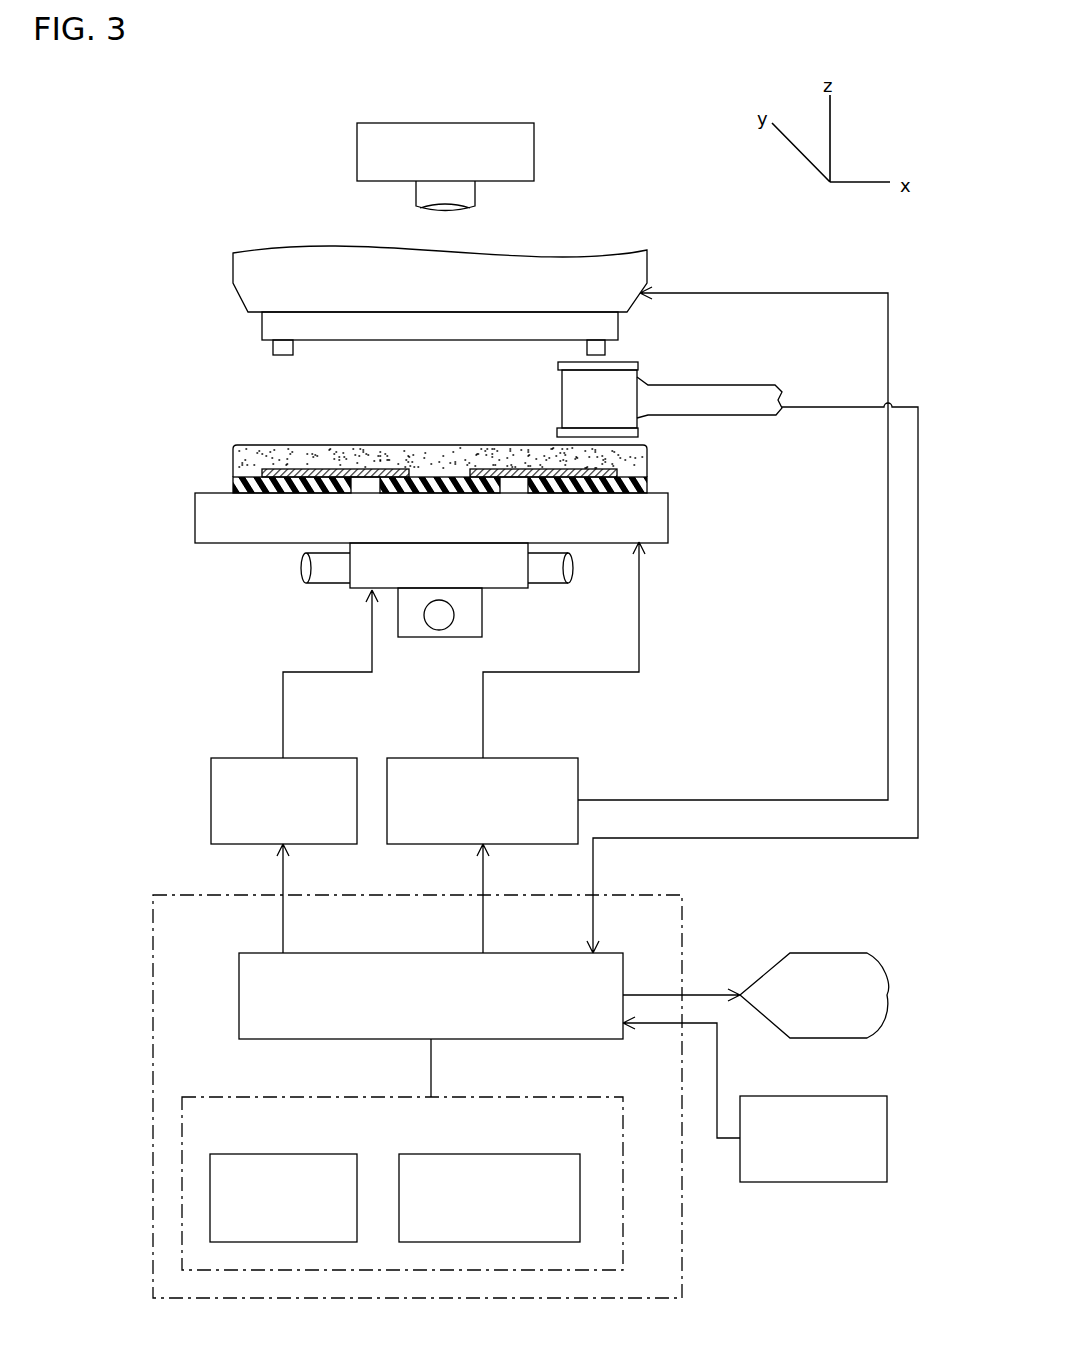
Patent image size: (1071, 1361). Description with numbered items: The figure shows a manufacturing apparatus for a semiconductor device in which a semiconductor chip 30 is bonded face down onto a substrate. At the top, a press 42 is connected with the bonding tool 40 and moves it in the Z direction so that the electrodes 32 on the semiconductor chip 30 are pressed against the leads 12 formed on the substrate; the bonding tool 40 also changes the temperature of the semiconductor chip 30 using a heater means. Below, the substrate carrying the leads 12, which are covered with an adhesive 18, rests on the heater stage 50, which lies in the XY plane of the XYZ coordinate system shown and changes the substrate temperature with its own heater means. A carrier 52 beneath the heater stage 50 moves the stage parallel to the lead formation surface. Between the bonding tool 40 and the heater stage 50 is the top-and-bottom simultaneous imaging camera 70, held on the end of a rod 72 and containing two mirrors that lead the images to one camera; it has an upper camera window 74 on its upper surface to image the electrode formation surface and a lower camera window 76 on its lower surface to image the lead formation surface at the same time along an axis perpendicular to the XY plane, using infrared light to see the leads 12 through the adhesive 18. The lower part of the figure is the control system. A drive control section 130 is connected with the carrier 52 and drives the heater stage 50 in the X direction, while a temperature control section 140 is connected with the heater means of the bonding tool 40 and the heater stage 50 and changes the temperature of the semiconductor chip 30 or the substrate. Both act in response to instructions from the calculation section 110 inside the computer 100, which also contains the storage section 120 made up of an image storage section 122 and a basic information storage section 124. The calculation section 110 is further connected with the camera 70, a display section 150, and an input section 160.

The leads 12 is at (320, 468).
The adhesive 18 is at (255, 465).
The semiconductor chip 30 is at (430, 326).
The electrodes 32 is at (272, 350).
The bonding tool 40 is at (255, 275).
The press 42 is at (505, 155).
The heater stage 50 is at (648, 517).
The carrier 52 is at (511, 603).
The top-and-bottom simultaneous imaging camera 70 is at (669, 387).
The rod 72 is at (773, 400).
The upper camera window 74 is at (565, 360).
The lower camera window 76 is at (632, 437).
The computer 100 is at (683, 933).
The calculation section 110 is at (623, 967).
The storage section 120 is at (623, 1137).
The image storage section 122 is at (357, 1180).
The basic information storage section 124 is at (580, 1180).
The drive control section 130 is at (347, 758).
The temperature control section 140 is at (525, 758).
The display section 150 is at (883, 977).
The input section 160 is at (887, 1123).